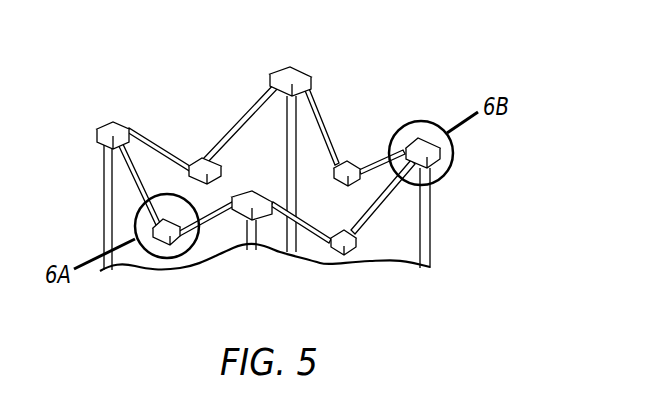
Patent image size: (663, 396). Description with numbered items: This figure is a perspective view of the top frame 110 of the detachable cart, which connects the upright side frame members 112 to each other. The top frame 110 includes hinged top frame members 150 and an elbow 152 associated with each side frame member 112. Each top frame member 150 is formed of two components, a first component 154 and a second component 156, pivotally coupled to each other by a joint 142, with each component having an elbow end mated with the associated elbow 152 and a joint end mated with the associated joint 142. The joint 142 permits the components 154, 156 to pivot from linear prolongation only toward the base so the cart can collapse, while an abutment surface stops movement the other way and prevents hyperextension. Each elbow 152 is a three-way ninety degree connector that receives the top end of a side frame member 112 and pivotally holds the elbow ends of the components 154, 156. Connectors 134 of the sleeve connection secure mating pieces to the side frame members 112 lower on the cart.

The top frame 110 is at (431, 53).
The side frame member 112 is at (107, 237).
The connector 134 is at (230, 150).
The joint 142 is at (200, 160).
The top frame member 150 is at (191, 73).
The elbow 152 is at (114, 122).
The first component 154 is at (135, 183).
The second component 156 is at (147, 143).